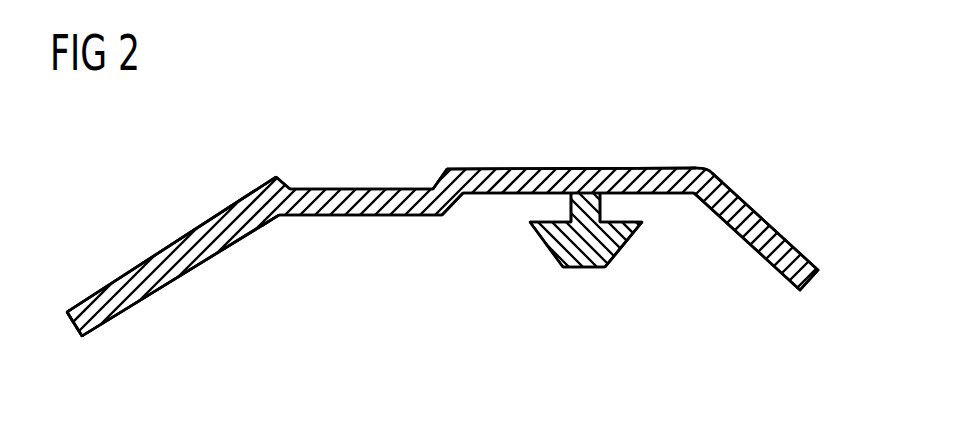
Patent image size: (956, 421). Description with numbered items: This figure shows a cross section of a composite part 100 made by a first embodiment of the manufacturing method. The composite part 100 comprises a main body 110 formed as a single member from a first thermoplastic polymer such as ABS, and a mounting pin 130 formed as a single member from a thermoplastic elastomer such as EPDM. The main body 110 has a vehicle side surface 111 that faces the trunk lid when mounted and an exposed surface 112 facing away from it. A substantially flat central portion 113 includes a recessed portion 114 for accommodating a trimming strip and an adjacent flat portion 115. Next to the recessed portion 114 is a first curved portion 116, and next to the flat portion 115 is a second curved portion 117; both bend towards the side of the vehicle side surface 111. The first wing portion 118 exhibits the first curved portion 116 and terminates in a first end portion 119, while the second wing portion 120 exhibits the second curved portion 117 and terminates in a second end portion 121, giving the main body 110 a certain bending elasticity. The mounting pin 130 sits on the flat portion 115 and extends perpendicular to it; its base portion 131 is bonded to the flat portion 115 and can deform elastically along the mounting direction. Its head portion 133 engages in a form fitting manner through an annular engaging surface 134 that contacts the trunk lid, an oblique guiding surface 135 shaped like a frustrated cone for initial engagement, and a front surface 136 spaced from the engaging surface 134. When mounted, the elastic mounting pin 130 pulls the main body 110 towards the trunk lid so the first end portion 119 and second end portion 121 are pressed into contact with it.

The composite part 100 is at (413, 133).
The main body 110 is at (225, 223).
The vehicle side surface 111 is at (183, 278).
The exposed surface 112 is at (477, 167).
The central portion 113 is at (450, 211).
The recessed portion 114 is at (360, 188).
The flat portion 115 is at (563, 167).
The first curved portion 116 is at (274, 213).
The second curved portion 117 is at (720, 172).
The first wing portion 118 is at (143, 273).
The first end portion 119 is at (77, 340).
The second leg 120 is at (777, 228).
The second end portion 121 is at (812, 284).
The mounting pin 130 is at (557, 275).
The base portion 131 is at (601, 212).
The head portion 133 is at (583, 269).
The engaging surface 134 is at (556, 215).
The guiding surface 135 is at (628, 248).
The front surface 136 is at (601, 272).